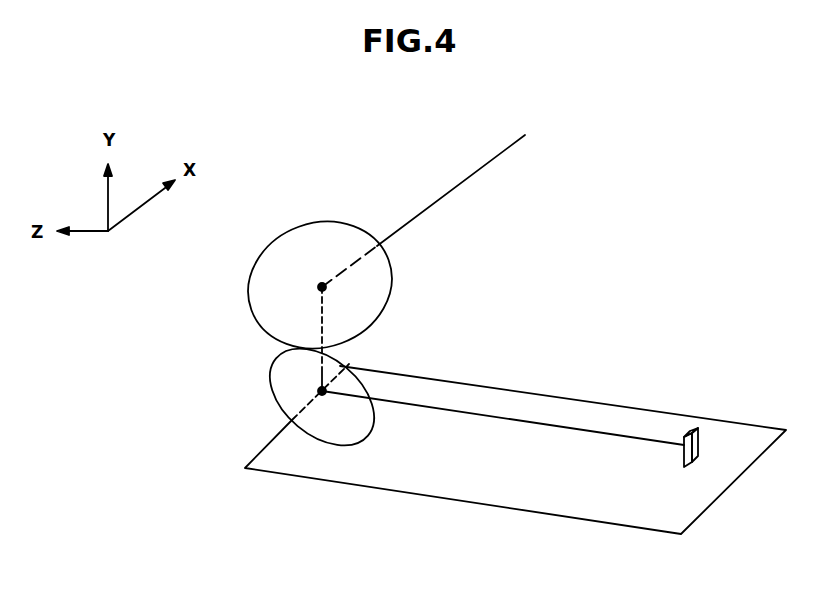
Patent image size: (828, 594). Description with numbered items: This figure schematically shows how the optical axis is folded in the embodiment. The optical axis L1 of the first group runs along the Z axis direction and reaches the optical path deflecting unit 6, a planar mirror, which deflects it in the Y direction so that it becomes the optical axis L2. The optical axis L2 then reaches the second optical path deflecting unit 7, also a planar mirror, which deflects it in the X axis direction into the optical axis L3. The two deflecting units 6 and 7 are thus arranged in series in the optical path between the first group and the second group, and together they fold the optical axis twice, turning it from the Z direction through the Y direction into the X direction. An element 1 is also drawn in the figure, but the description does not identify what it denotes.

The sensor 1 is at (706, 442).
The optical path deflecting unit 6 is at (272, 387).
The optical path deflecting unit 7 is at (298, 229).
The optical axis L1 is at (558, 428).
The optical axis L2 is at (325, 367).
The optical axis L3 is at (463, 179).